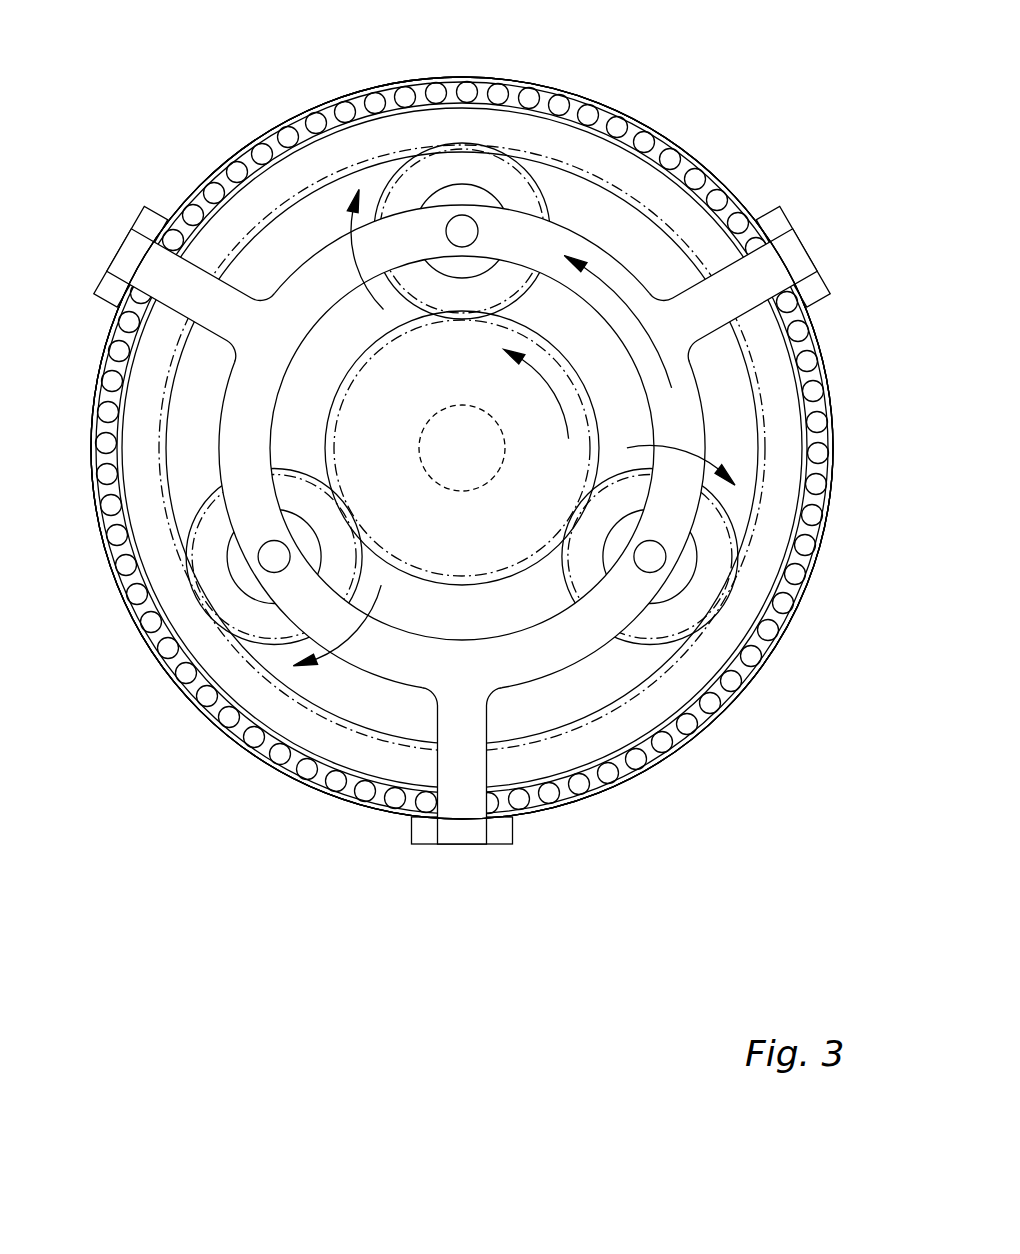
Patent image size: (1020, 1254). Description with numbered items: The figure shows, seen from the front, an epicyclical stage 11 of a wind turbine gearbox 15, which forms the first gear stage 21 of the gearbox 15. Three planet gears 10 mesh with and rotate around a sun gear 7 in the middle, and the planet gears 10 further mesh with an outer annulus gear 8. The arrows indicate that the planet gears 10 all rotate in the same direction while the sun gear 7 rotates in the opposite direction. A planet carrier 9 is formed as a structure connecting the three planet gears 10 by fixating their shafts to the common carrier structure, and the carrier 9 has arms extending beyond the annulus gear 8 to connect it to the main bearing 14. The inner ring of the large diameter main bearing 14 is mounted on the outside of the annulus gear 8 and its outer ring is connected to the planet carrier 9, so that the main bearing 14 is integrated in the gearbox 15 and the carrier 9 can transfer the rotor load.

The sun gear 7 is at (392, 418).
The annulus gear 8 is at (688, 220).
The planet carrier 9 is at (325, 277).
The planet gears 10 is at (535, 220).
The epicyclical stage 11 is at (243, 793).
The main bearing 14 is at (655, 135).
The wind turbine gearbox 15 is at (147, 763).
The first gear stage 21 is at (765, 772).